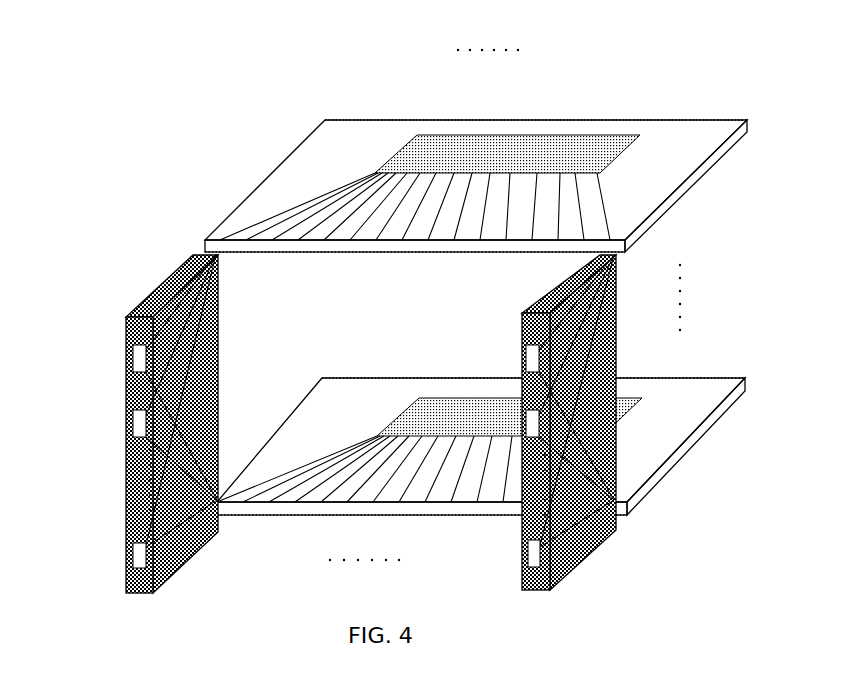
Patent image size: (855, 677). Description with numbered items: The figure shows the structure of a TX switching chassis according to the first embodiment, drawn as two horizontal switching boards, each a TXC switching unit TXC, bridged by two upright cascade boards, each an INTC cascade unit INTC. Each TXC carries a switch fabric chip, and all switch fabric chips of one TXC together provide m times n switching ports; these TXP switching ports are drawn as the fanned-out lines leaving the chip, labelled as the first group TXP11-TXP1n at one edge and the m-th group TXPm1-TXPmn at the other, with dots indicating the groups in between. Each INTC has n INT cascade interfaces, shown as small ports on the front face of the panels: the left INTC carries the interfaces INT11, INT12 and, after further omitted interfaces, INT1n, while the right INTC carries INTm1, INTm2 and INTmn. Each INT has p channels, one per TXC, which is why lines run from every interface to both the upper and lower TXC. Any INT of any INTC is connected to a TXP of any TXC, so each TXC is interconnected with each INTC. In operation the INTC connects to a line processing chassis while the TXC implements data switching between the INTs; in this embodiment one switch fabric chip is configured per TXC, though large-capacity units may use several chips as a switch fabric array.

The TXC switching unit TXC is at (330, 405).
The TXP switching ports TXP11-TXP1n is at (383, 160).
The TXP switching ports TXPm1-TXPmn is at (594, 160).
The INTC cascade unit INTC is at (345, 425).
The INT cascade interface INT11 is at (133, 345).
The INT cascade interface INT12 is at (133, 412).
The INT cascade interface INT1n is at (133, 550).
The INT cascade interface INTm1 is at (526, 347).
The INT cascade interface INTm2 is at (539, 425).
The INT cascade interface INTmn is at (528, 557).